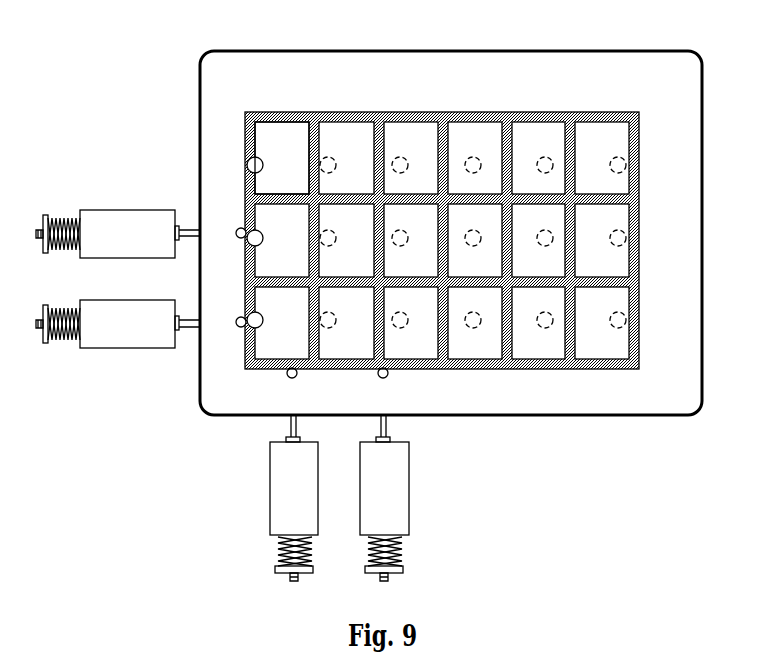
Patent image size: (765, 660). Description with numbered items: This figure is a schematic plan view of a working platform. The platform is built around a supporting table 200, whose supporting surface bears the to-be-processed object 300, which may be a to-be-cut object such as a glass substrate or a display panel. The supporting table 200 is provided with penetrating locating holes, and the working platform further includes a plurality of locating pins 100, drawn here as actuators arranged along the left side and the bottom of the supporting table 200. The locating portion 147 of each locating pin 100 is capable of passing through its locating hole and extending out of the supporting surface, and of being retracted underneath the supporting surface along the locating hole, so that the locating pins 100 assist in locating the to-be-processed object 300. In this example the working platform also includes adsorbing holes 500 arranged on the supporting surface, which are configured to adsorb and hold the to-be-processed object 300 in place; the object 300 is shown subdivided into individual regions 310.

The locating pin 100 is at (388, 500).
The locating portion 147 is at (237, 228).
The supporting table 200 is at (528, 80).
The to-be-processed object 300 is at (382, 112).
The cell 310 is at (273, 140).
The adsorbing hole 500 is at (621, 158).